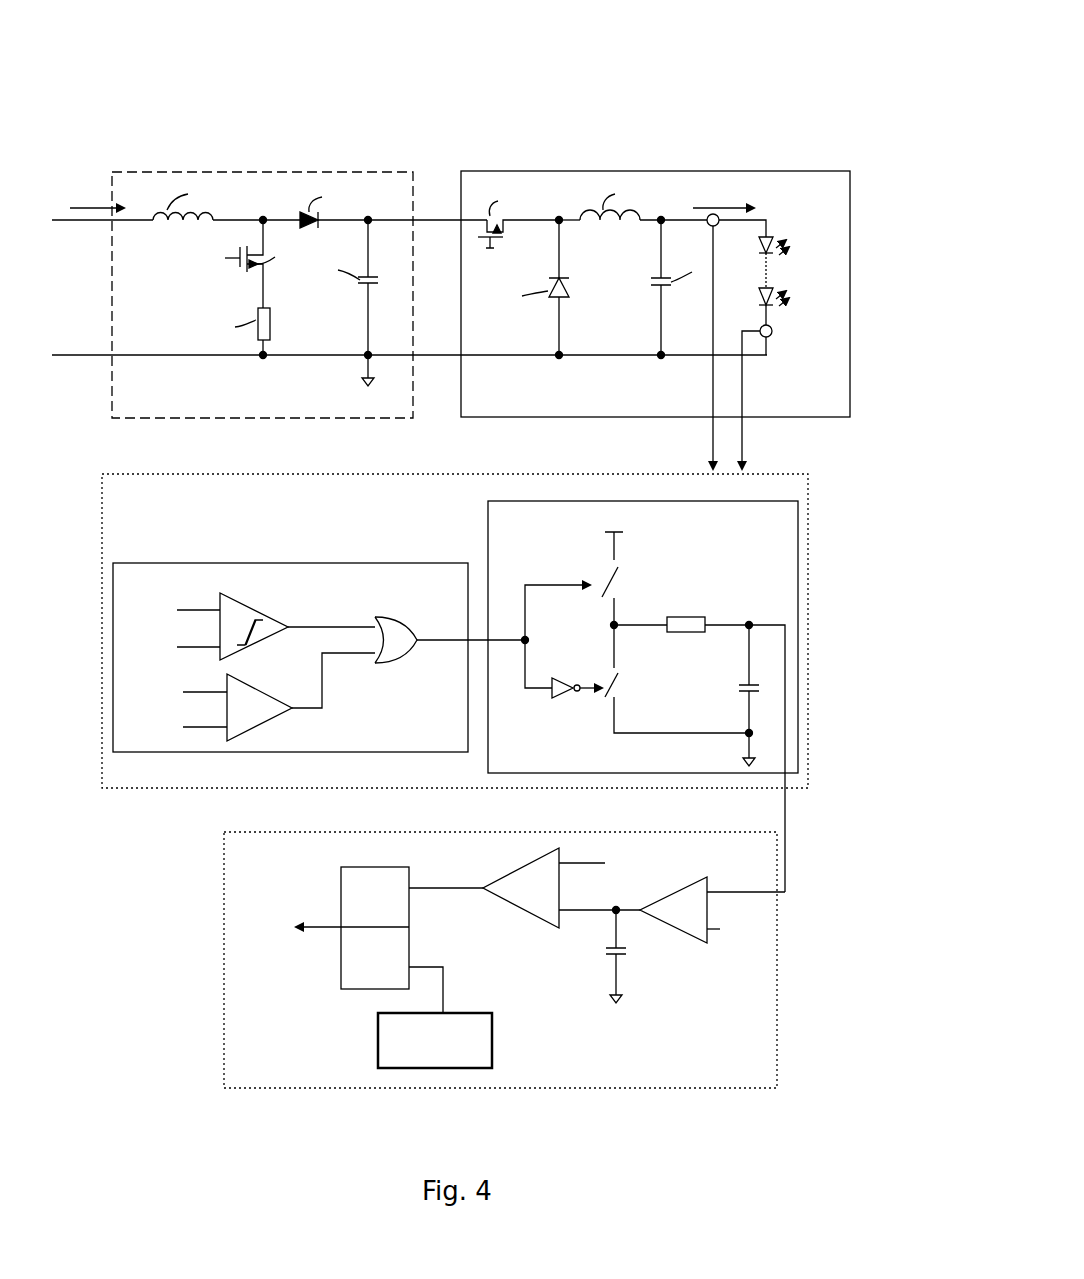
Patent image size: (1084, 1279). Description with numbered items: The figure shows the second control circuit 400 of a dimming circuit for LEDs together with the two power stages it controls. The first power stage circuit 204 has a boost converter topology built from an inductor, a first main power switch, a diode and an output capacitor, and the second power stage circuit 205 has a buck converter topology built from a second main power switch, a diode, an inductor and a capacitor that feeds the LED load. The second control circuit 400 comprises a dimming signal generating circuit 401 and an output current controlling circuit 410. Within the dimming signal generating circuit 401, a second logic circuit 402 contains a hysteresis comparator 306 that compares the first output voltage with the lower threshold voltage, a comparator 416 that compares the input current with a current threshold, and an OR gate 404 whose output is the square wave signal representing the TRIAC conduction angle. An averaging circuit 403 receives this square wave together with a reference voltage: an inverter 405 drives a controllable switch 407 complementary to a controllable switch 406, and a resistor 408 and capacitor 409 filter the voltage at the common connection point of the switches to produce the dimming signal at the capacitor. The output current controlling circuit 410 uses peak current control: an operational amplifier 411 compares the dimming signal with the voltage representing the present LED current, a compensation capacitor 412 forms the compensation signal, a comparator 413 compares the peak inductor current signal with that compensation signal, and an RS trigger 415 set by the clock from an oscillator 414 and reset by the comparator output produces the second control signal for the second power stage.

The second control circuit 400 is at (669, 78).
The first power stage circuit 204 is at (290, 410).
The second power stage circuit 205 is at (584, 408).
The dimming signal generating circuit 401 is at (167, 783).
The second logic circuit 402 is at (449, 743).
The averaging circuit 403 is at (555, 768).
The hysteresis comparator 306 is at (246, 610).
The OR gate 404 is at (400, 606).
The comparator 416 is at (254, 688).
The inverter 405 is at (548, 697).
The controllable switch 406 is at (612, 586).
The controllable switch 407 is at (615, 690).
The resistor 408 is at (690, 617).
The capacitor 409 is at (742, 690).
The output current controlling circuit 410 is at (290, 1077).
The operational amplifier 411 is at (690, 935).
The compensation capacitor 412 is at (609, 956).
The comparator 413 is at (522, 870).
The oscillator 414 is at (417, 1065).
The RS trigger 415 is at (341, 980).